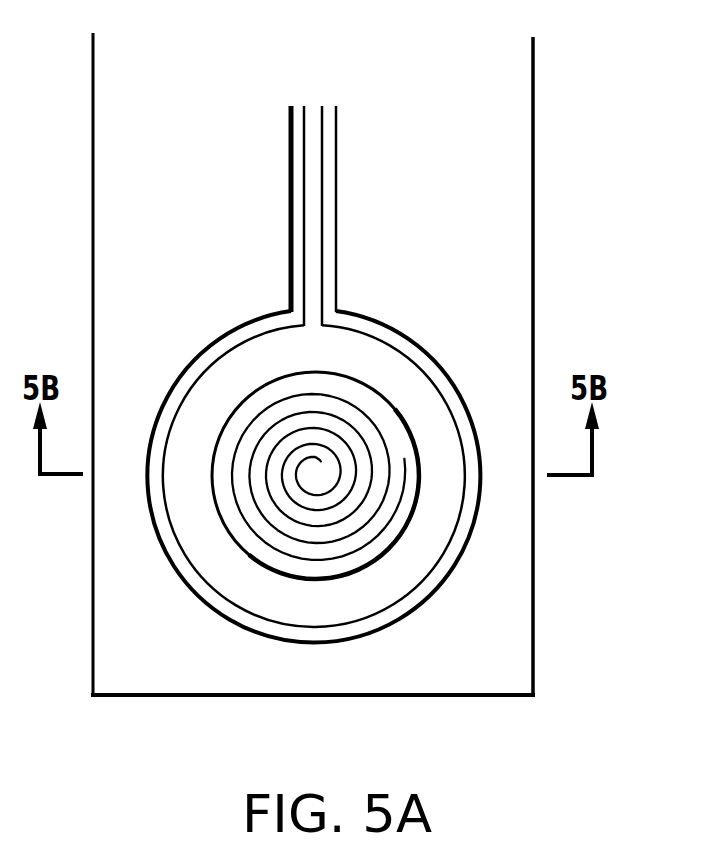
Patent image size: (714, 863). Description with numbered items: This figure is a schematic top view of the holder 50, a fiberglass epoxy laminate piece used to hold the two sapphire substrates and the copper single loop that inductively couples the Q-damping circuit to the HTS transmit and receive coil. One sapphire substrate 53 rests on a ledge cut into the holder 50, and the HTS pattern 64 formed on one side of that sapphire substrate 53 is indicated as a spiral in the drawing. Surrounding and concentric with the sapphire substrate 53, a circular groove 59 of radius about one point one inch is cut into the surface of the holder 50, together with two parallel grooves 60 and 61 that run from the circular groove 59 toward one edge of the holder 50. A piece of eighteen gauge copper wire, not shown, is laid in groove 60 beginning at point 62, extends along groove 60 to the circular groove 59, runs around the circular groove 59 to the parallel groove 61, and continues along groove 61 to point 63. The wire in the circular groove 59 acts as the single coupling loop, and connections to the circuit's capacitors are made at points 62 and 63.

The holder 50 is at (534, 155).
The sapphire substrate 53 is at (390, 420).
The circular groove 59 is at (165, 543).
The parallel groove 60 is at (297, 262).
The parallel groove 61 is at (331, 262).
The point 62 is at (298, 110).
The point 63 is at (330, 110).
The HTS pattern 64 is at (262, 415).